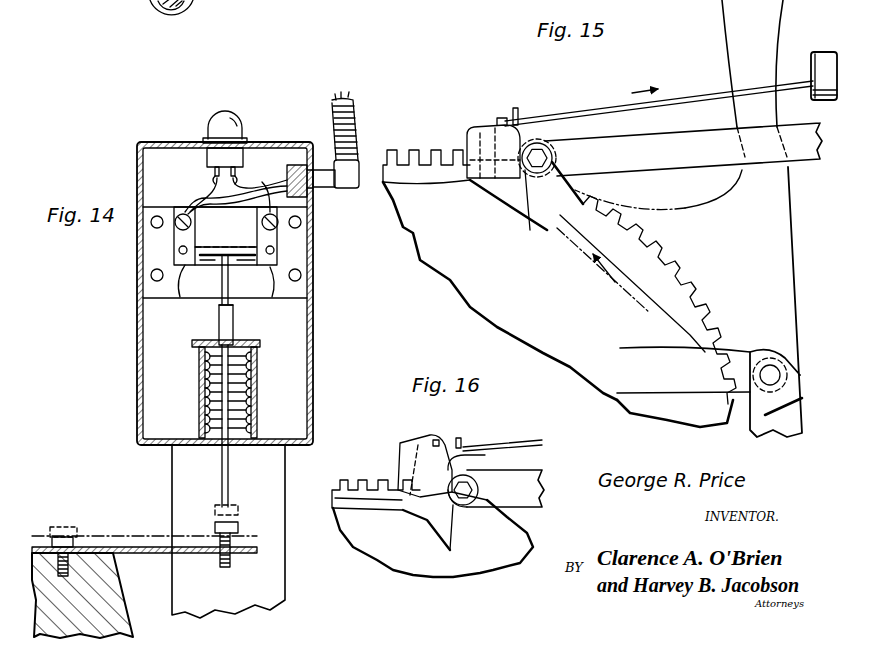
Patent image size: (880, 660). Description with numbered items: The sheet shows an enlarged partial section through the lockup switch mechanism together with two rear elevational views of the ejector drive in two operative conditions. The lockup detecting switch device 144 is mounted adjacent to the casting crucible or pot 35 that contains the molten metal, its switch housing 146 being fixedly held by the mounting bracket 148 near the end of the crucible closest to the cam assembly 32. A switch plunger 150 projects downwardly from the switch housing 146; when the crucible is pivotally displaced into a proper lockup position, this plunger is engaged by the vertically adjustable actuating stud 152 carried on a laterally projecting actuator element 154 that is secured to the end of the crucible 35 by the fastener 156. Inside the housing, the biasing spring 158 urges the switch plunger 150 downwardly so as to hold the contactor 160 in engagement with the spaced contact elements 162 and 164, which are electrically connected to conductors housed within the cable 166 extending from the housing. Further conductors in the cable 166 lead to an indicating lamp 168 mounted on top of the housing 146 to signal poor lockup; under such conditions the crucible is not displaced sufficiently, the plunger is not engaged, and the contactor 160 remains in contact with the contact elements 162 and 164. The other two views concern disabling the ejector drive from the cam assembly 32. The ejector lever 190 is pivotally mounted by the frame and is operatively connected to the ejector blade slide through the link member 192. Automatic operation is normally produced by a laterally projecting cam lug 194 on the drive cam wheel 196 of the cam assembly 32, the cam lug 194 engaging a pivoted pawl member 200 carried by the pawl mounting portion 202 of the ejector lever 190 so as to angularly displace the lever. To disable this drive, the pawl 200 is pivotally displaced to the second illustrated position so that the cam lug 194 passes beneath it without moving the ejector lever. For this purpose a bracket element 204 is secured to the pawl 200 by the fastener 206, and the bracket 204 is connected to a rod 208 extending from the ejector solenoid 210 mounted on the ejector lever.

In FIG. 14, the cam assembly 32 is at (293, 0).
In FIG. 14, the lockup detecting switch device 144 is at (134, 140).
In FIG. 14, the switch housing 146 is at (165, 142).
In FIG. 14, the indicating lamp 168 is at (232, 109).
In FIG. 14, the cable 166 is at (338, 132).
In FIG. 14, the contactor 160 is at (213, 258).
In FIG. 14, the contact element 162 is at (177, 293).
In FIG. 14, the contact element 164 is at (270, 294).
In FIG. 14, the biasing spring 158 is at (205, 411).
In FIG. 14, the switch plunger 150 is at (230, 457).
In FIG. 14, the mounting bracket 148 is at (180, 497).
In FIG. 14, the actuating stud 152 is at (231, 565).
In FIG. 14, the actuator element 154 is at (120, 547).
In FIG. 14, the fastener 156 is at (62, 533).
In FIG. 14, the casting crucible 35 is at (107, 584).
In FIG. 15, the drive cam wheel 196 is at (405, 168).
In FIG. 16, the drive cam wheel 196 is at (342, 488).
In FIG. 15, the cam lug 194 is at (597, 226).
In FIG. 16, the cam lug 194 is at (386, 512).
In FIG. 15, the pawl member 200 is at (478, 148).
In FIG. 16, the pawl member 200 is at (420, 455).
In FIG. 15, the fastener 206 is at (497, 124).
In FIG. 15, the bracket element 204 is at (534, 100).
In FIG. 15, the rod 208 is at (581, 111).
In FIG. 16, the rod 208 is at (513, 434).
In FIG. 15, the ejector solenoid 210 is at (820, 53).
In FIG. 15, the link member 192 is at (612, 362).
In FIG. 15, the ejector lever 190 is at (738, 48).
In FIG. 15, the pawl mounting portion 202 is at (678, 218).